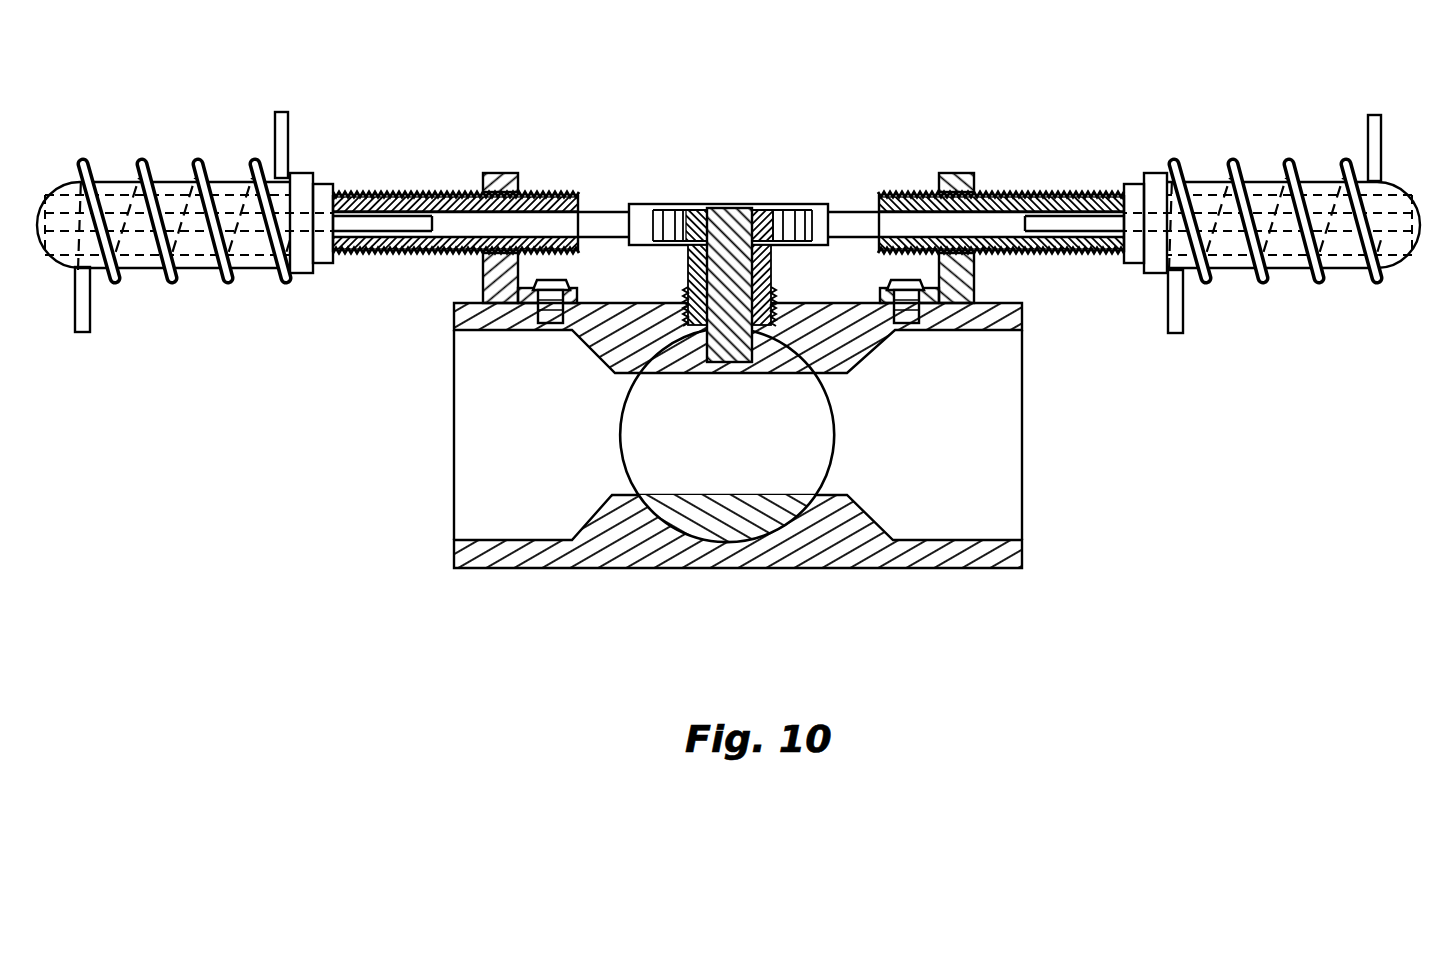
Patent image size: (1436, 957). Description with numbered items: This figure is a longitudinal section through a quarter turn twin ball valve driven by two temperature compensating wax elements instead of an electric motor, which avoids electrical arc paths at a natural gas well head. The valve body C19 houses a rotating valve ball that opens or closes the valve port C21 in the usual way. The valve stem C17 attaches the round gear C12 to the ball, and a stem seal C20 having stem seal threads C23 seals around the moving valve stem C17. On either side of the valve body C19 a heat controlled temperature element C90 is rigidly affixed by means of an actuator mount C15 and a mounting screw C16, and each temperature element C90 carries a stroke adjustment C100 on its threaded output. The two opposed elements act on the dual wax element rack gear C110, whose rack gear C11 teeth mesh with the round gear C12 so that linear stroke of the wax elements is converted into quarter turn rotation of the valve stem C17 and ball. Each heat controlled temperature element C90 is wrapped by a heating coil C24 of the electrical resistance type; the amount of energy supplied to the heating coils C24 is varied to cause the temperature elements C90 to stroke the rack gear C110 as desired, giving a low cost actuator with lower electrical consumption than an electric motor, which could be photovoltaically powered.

The heat controlled temperature element C90 is at (227, 180).
The stroke adjustment C100 is at (447, 193).
The dual wax element rack gear C110 is at (1000, 195).
The rack gear C11 is at (678, 205).
The round gear C12 is at (768, 205).
The actuator mount C15 is at (492, 268).
The mounting screw C16 is at (552, 300).
The valve stem C17 is at (732, 269).
The valve body C19 is at (990, 550).
The stem seal C20 is at (690, 288).
The valve port C21 is at (797, 461).
The stem seal threads C23 is at (760, 337).
The valve opening resistance heating coil C24 is at (107, 287).